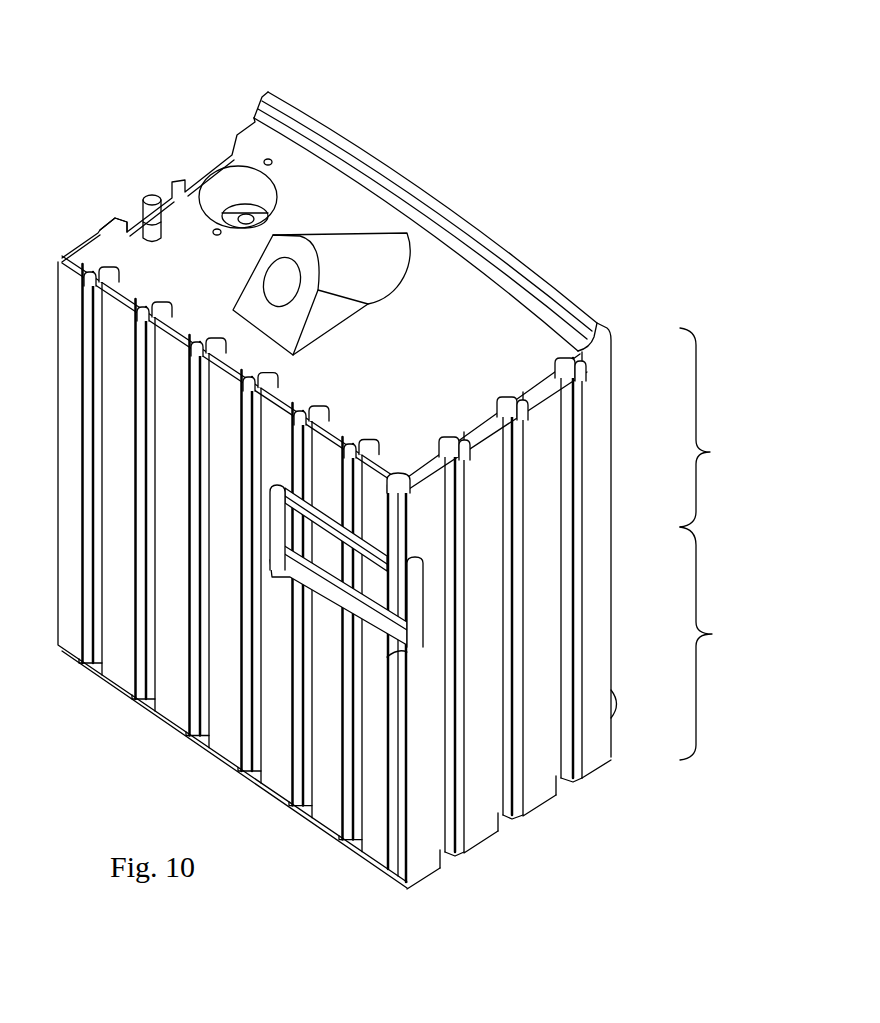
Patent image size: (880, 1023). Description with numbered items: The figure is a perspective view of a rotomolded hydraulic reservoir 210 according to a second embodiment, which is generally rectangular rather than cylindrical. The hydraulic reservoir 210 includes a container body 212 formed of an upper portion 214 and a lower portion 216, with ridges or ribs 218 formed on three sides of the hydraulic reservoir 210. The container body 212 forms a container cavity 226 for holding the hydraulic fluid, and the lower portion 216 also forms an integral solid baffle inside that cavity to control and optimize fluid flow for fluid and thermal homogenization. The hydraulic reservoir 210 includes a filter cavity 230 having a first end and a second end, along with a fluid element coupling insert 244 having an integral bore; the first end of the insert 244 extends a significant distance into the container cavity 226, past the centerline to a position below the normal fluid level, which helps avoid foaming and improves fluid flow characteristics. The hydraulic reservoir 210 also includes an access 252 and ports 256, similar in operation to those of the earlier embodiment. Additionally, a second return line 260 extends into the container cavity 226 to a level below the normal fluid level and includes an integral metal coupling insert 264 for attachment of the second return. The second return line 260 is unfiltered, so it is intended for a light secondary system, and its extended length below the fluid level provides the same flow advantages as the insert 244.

The hydraulic reservoir 210 is at (643, 214).
The container body 212 is at (452, 367).
The upper portion 214 is at (722, 427).
The lower portion 216 is at (721, 643).
The ribs 218 is at (199, 737).
The container cavity 226 is at (404, 425).
The filter cavity 230 is at (291, 172).
The fluid element coupling insert 244 is at (262, 190).
The access 252 is at (268, 292).
The ports 256 is at (616, 702).
The second return line 260 is at (143, 225).
The integral metal coupling insert 264 is at (148, 200).